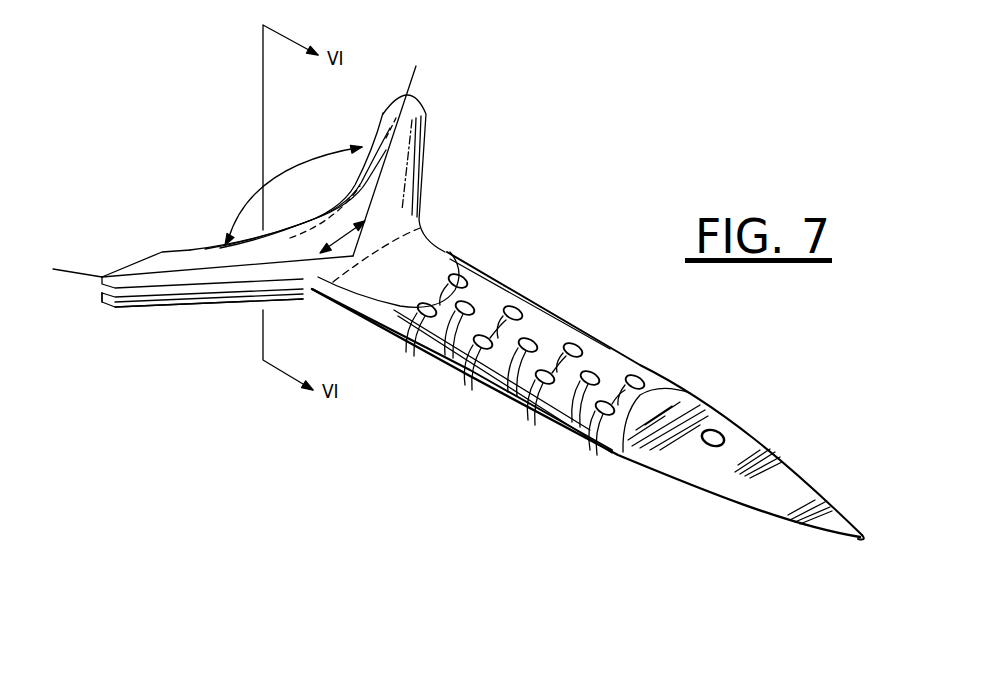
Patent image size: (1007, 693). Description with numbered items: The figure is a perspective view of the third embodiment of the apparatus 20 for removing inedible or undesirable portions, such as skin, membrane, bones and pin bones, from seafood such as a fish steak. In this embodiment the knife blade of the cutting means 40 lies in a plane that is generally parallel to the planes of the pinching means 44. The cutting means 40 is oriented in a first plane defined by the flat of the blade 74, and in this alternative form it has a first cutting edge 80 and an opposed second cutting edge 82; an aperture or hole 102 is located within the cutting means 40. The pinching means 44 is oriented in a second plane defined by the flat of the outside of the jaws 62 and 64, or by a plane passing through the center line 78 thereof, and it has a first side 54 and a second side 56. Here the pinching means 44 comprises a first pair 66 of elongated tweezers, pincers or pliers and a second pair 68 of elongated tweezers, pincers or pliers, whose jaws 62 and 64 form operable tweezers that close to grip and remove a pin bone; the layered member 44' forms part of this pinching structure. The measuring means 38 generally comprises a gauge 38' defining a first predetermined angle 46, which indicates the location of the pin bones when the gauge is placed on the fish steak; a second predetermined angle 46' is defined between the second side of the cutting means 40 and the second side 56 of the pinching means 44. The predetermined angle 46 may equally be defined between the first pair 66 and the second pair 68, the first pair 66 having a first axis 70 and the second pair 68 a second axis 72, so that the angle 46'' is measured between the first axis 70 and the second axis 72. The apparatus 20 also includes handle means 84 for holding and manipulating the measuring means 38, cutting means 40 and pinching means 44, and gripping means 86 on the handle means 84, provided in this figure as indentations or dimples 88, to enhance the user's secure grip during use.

The apparatus 20 is at (630, 492).
The measuring means 38 is at (314, 273).
The gauge 38' is at (408, 258).
The cutting means 40 is at (712, 477).
The pinching means 44 is at (297, 246).
The layer 44' is at (209, 323).
The first predetermined angle 46 is at (293, 180).
The second predetermined angle 46' is at (385, 255).
The angle between first and second axes 46'' is at (319, 216).
The first side of pinching means 54 is at (390, 110).
The second side of pinching means 56 is at (425, 130).
The jaw 62 is at (427, 112).
The jaw 64 is at (423, 172).
The first pair of elongated tweezers, pincers or pliers 66 is at (378, 130).
The second pair of elongated tweezers, pincers or pliers 68 is at (191, 258).
The first axis 70 is at (411, 77).
The second axis 72 is at (92, 270).
The blade 74 is at (733, 434).
The center line of pinching means 78 is at (227, 247).
The first cutting edge 80 is at (766, 513).
The second cutting edge 82 is at (818, 487).
The handle means 84 is at (557, 418).
The gripping means 86 is at (450, 357).
The indentations or dimples 88 is at (468, 282).
The aperture or hole 102 is at (716, 431).